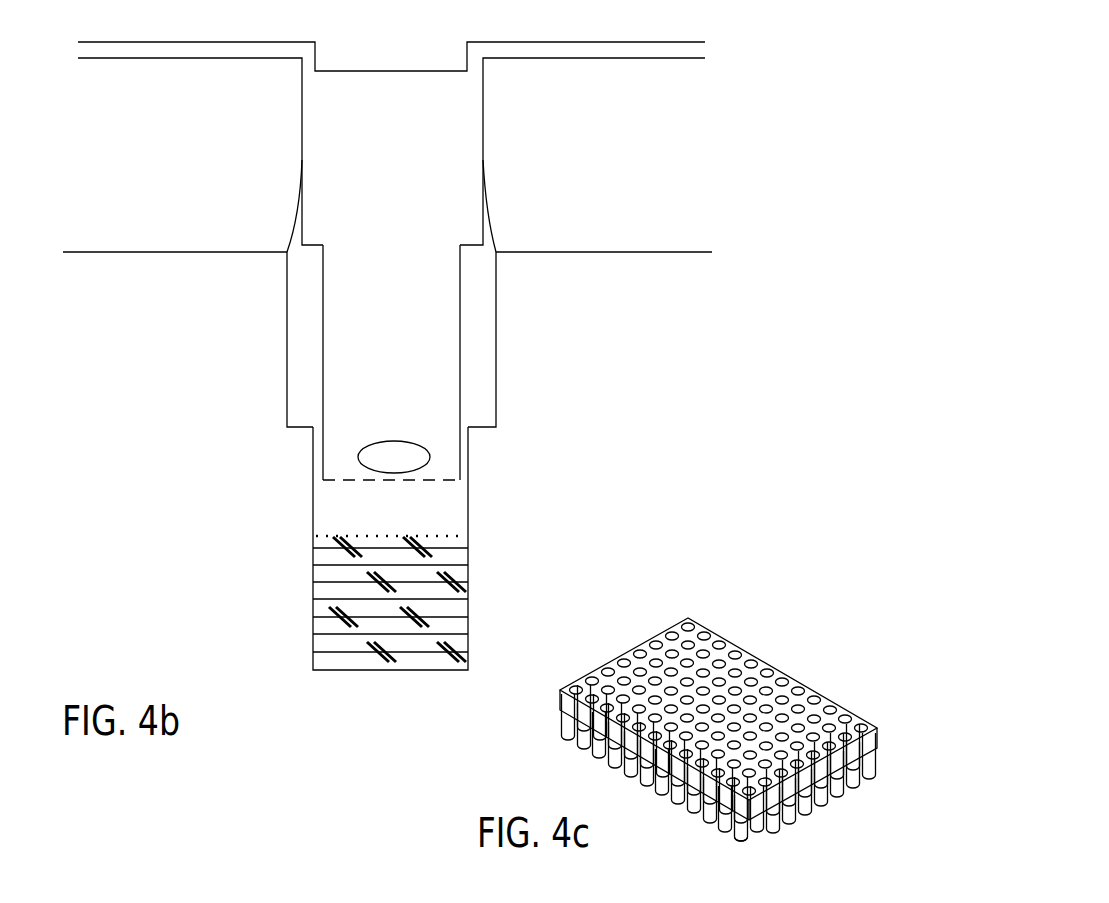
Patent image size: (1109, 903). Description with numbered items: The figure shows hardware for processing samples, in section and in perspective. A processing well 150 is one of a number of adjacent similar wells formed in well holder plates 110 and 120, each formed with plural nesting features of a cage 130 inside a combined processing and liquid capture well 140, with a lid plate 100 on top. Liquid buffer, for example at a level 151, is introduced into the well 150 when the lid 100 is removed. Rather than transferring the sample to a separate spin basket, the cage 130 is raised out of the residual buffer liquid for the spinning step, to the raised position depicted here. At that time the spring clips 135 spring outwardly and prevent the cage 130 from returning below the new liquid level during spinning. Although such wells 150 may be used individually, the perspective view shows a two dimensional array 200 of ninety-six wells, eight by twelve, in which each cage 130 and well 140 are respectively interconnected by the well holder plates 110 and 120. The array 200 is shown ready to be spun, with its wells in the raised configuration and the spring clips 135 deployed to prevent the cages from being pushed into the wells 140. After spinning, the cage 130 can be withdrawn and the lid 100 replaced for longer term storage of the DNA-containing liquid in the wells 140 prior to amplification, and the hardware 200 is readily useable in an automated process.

In FIG. 4B, the lid plate 100 is at (135, 42).
In FIG. 4B, the well holder plate 110 is at (145, 58).
In FIG. 4C, the well holder plate 110 is at (842, 703).
In FIG. 4B, the well holder plate 120 is at (118, 252).
In FIG. 4C, the well holder plate 120 is at (840, 783).
In FIG. 4B, the cage 130 is at (483, 122).
In FIG. 4C, the cage 130 is at (700, 810).
In FIG. 4B, the spring clips 135 is at (285, 215).
In FIG. 4B, the combined processing and liquid capture well 140 is at (467, 497).
In FIG. 4C, the combined processing and liquid capture well 140 is at (743, 832).
In FIG. 4B, the processing well 150 is at (157, 468).
In FIG. 4C, the processing well 150 is at (608, 763).
In FIG. 4B, the liquid buffer level 151 is at (387, 533).
In FIG. 4C, the well array 200 is at (697, 618).